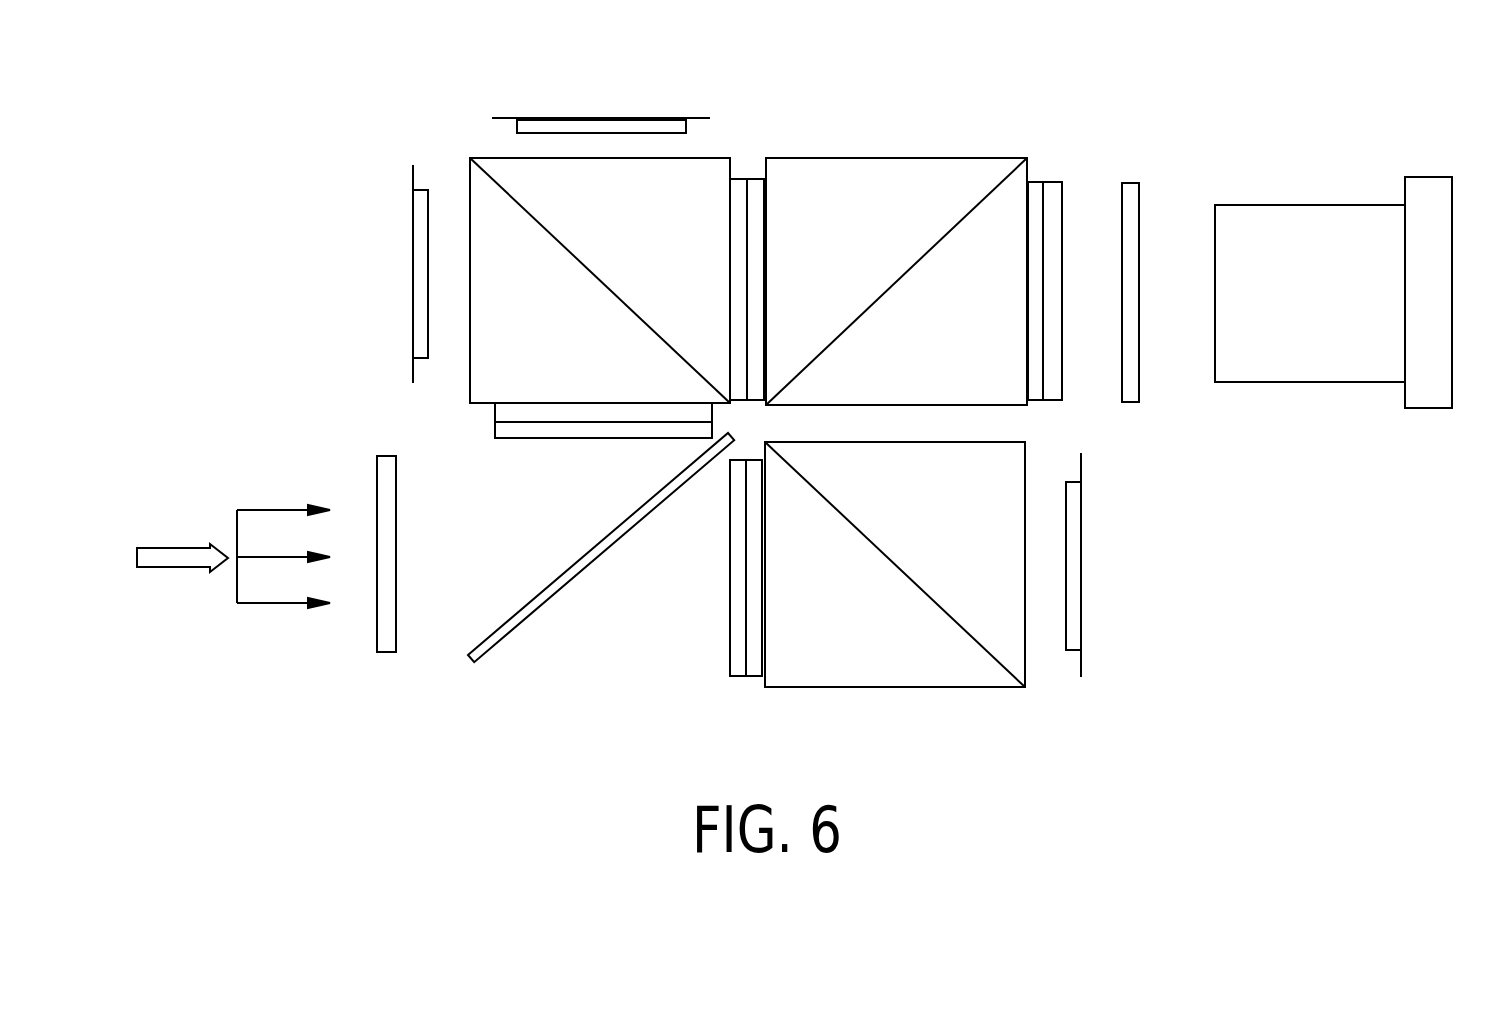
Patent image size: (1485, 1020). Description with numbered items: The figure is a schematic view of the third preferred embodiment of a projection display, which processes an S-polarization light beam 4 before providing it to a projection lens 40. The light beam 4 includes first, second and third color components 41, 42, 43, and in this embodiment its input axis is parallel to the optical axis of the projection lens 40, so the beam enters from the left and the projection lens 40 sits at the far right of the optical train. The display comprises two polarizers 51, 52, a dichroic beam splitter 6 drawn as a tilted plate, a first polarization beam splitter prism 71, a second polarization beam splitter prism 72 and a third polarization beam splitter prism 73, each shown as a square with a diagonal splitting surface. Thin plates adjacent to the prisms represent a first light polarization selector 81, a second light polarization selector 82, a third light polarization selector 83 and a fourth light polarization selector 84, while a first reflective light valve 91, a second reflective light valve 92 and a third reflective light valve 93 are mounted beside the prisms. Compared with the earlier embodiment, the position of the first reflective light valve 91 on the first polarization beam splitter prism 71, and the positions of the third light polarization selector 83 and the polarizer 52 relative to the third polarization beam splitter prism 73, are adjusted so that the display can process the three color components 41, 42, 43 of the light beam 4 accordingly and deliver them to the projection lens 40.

The S-polarization light beam 4 is at (165, 568).
The first color component 41 is at (265, 605).
The second color component 42 is at (257, 508).
The third color component 43 is at (283, 557).
The polarizer 51 is at (387, 640).
The polarizer 52 is at (1140, 215).
The dichroic beam splitter 6 is at (583, 572).
The first polarization beam splitter prism 71 is at (955, 675).
The second polarization beam splitter prism 72 is at (720, 187).
The third polarization beam splitter prism 73 is at (885, 187).
The first light polarization selector 81 is at (532, 430).
The second light polarization selector 82 is at (762, 212).
The third light polarization selector 83 is at (1050, 188).
The fourth light polarization selector 84 is at (733, 655).
The first reflective light valve 91 is at (1068, 582).
The second reflective light valve 92 is at (578, 125).
The third reflective light valve 93 is at (413, 262).
The projection lens 40 is at (1288, 237).